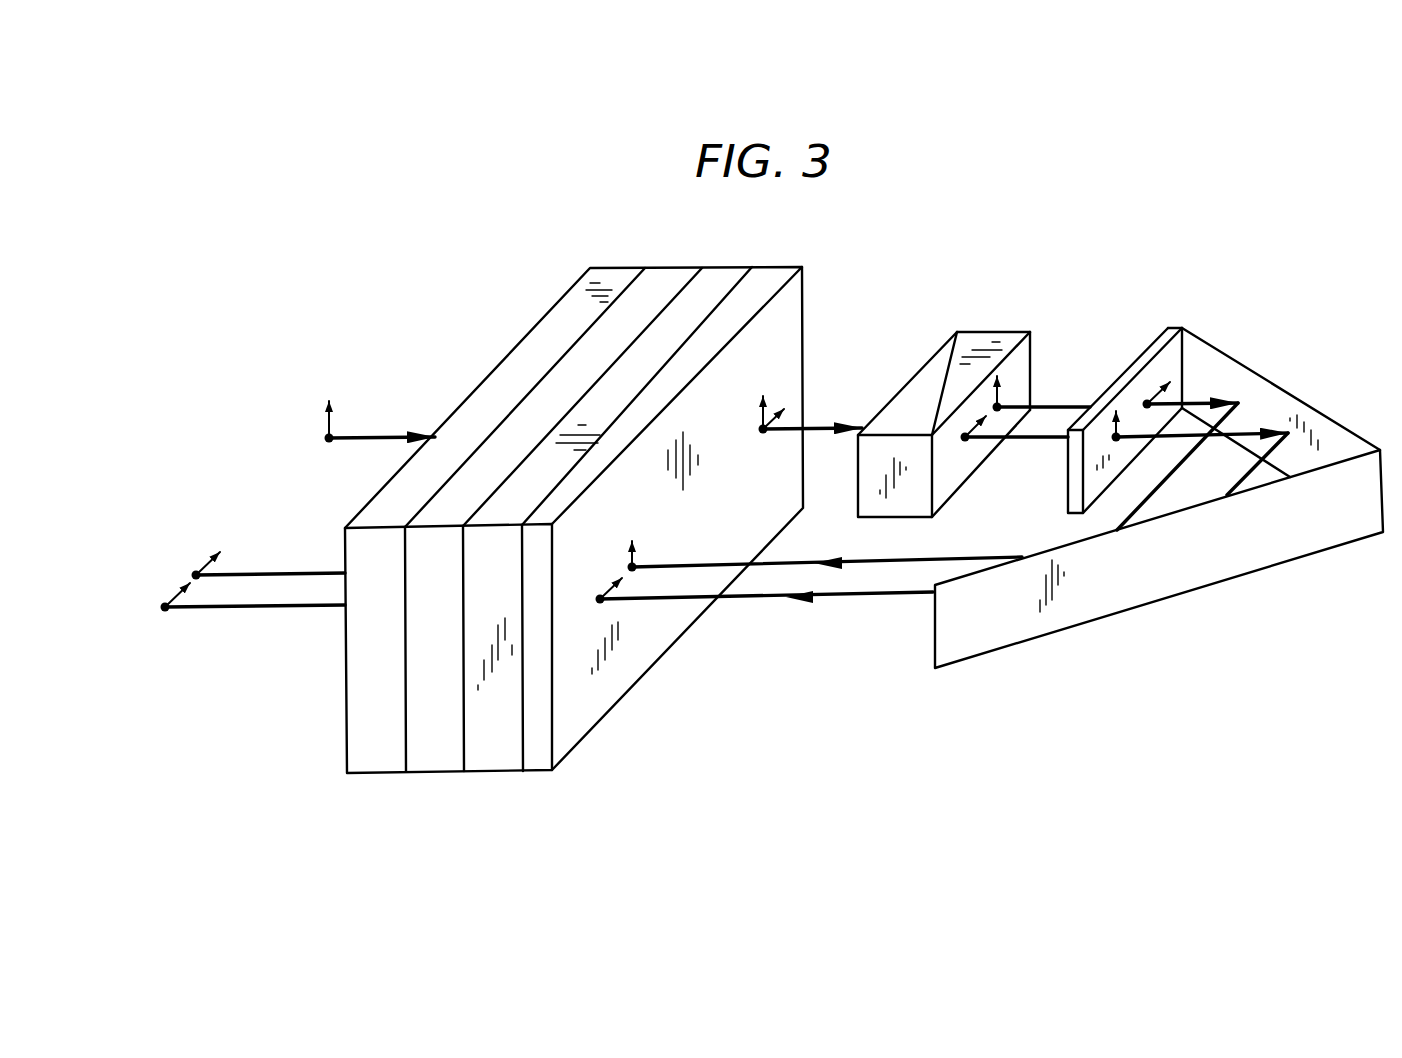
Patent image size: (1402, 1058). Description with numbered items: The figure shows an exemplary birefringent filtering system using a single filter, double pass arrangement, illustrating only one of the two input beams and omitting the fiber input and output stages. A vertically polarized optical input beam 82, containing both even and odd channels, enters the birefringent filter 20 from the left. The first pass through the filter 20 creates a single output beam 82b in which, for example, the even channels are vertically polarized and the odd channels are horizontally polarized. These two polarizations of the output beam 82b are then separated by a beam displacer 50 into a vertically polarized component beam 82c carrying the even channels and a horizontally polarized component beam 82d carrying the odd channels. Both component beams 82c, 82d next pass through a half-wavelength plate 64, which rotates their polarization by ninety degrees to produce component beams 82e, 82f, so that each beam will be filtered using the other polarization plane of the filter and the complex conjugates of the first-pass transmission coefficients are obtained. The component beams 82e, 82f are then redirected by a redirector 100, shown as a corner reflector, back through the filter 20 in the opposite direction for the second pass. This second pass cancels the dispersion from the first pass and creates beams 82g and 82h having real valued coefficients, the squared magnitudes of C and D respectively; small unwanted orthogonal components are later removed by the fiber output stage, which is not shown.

The birefringent filter 20 is at (690, 267).
The beam displacer 50 is at (988, 332).
The half-wavelength plate 64 is at (1170, 327).
The redirector 100 is at (1178, 596).
The optical input beam 82 is at (378, 433).
The output beam 82b is at (815, 426).
The vertically polarized component beam 82c is at (1058, 403).
The horizontally polarized component beam 82d is at (1015, 440).
The component beam 82e is at (1192, 402).
The component beam 82f is at (1248, 430).
The second-pass output beam 82g is at (250, 610).
The second-pass output beam 82h is at (290, 571).